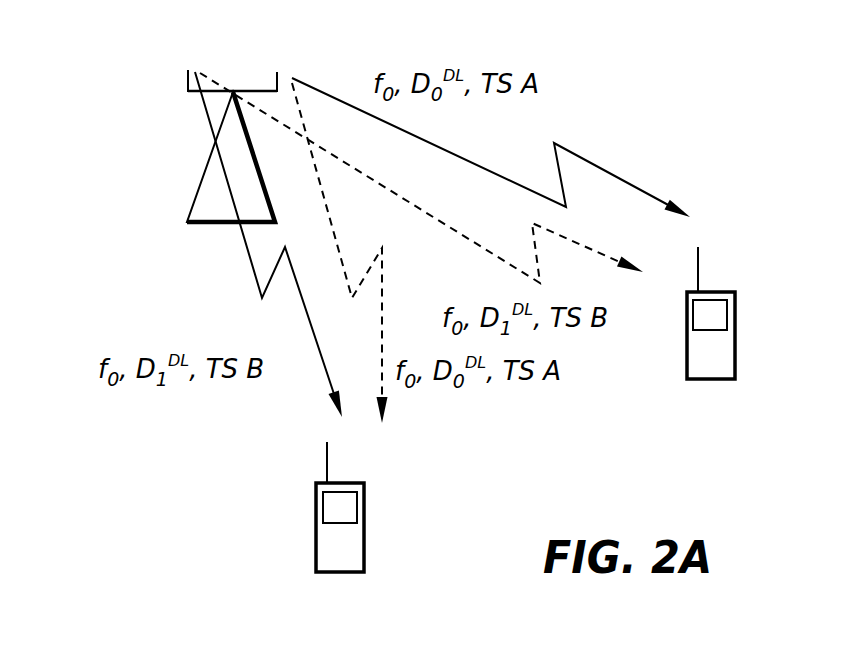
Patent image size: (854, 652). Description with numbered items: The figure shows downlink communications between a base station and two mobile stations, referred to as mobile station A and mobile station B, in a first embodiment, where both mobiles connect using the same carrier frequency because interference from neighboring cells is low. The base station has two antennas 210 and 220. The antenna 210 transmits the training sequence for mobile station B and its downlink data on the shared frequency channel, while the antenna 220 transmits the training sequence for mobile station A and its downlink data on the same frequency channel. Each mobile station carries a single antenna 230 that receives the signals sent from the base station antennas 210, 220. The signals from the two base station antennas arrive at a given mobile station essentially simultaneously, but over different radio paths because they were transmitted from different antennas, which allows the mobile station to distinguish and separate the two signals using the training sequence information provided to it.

The antenna 210 is at (187, 80).
The antenna 220 is at (277, 83).
The single antenna 230 is at (698, 263).